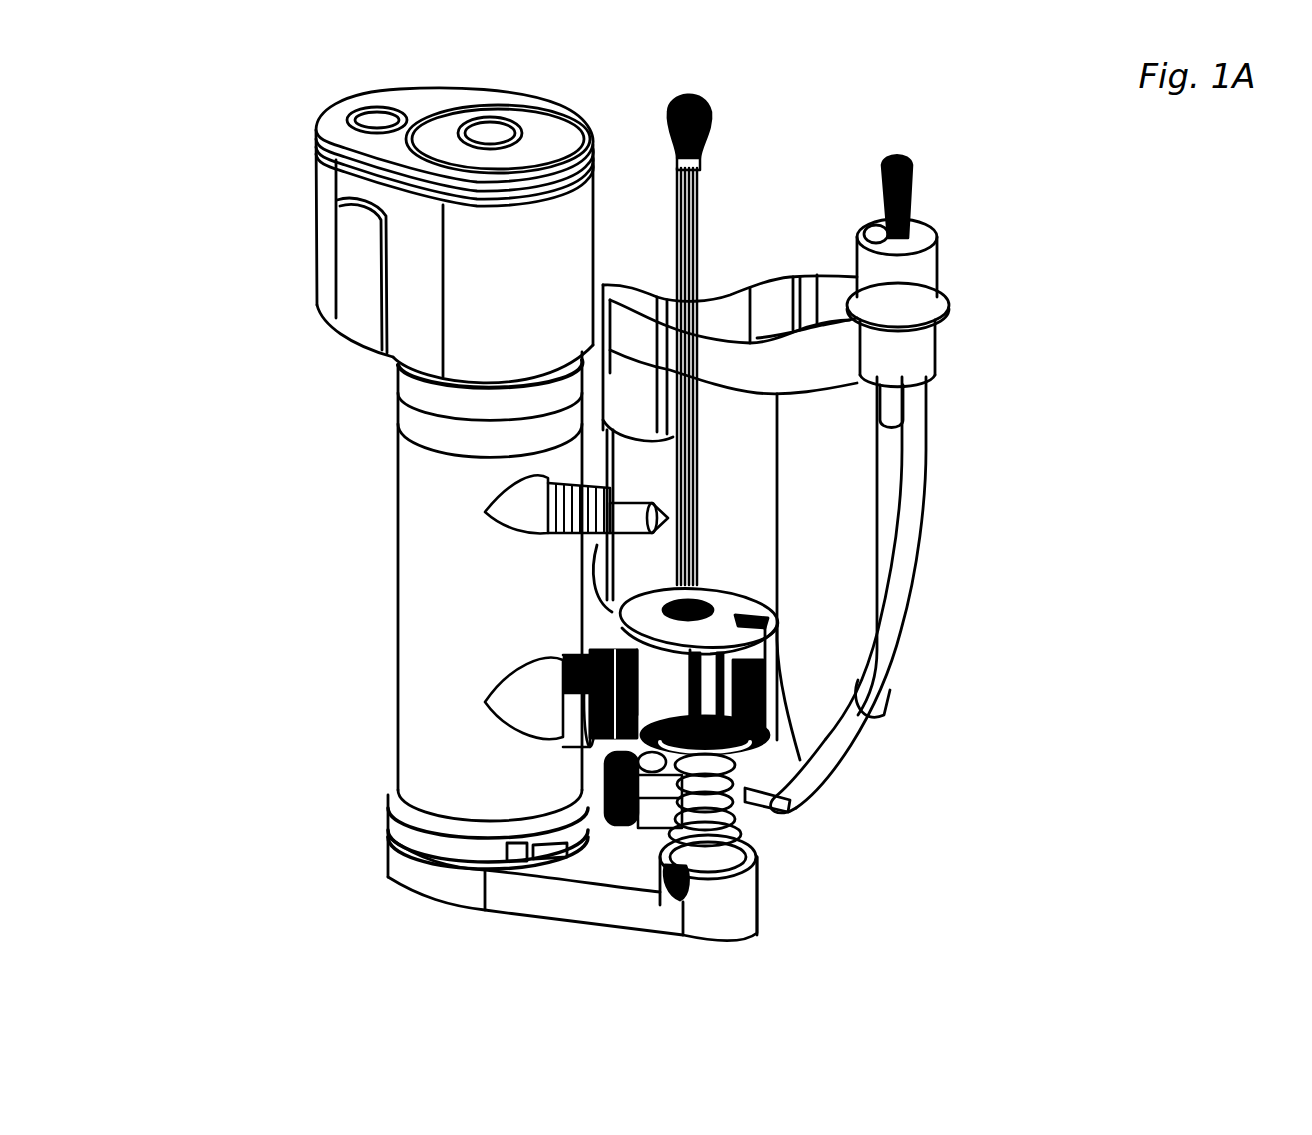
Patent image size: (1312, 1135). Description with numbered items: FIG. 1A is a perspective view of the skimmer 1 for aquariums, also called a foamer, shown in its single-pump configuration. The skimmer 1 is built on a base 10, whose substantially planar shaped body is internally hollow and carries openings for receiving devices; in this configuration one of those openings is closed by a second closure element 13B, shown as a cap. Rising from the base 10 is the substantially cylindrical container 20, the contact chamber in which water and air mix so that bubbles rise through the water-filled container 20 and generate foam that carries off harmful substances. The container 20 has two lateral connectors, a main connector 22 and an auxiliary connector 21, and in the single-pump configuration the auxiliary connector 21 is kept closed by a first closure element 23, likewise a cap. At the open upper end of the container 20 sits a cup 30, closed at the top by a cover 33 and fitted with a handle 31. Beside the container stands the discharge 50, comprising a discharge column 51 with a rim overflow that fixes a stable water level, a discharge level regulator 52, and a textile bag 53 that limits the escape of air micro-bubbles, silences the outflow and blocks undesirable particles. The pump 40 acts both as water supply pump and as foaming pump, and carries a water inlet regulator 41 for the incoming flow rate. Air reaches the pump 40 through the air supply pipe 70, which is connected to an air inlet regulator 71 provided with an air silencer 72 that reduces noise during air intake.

The skimmer 1 is at (290, 98).
The base 10 is at (383, 870).
The second closure element 13B is at (738, 858).
The container 20 is at (395, 555).
The auxiliary connector 21 is at (562, 518).
The main connector 22 is at (563, 690).
The first closure element 23 is at (647, 520).
The cup 30 is at (284, 222).
The handle 31 is at (358, 300).
The cover 33 is at (536, 127).
The pump 40 is at (770, 728).
The water inlet regulator 41 is at (630, 822).
The discharge 50 is at (649, 284).
The discharge column 51 is at (653, 478).
The discharge level regulator 52 is at (703, 90).
The textile bag 53 is at (833, 528).
The air supply pipe 70 is at (903, 573).
The air inlet regulator 71 is at (907, 157).
The air silencer 72 is at (921, 274).